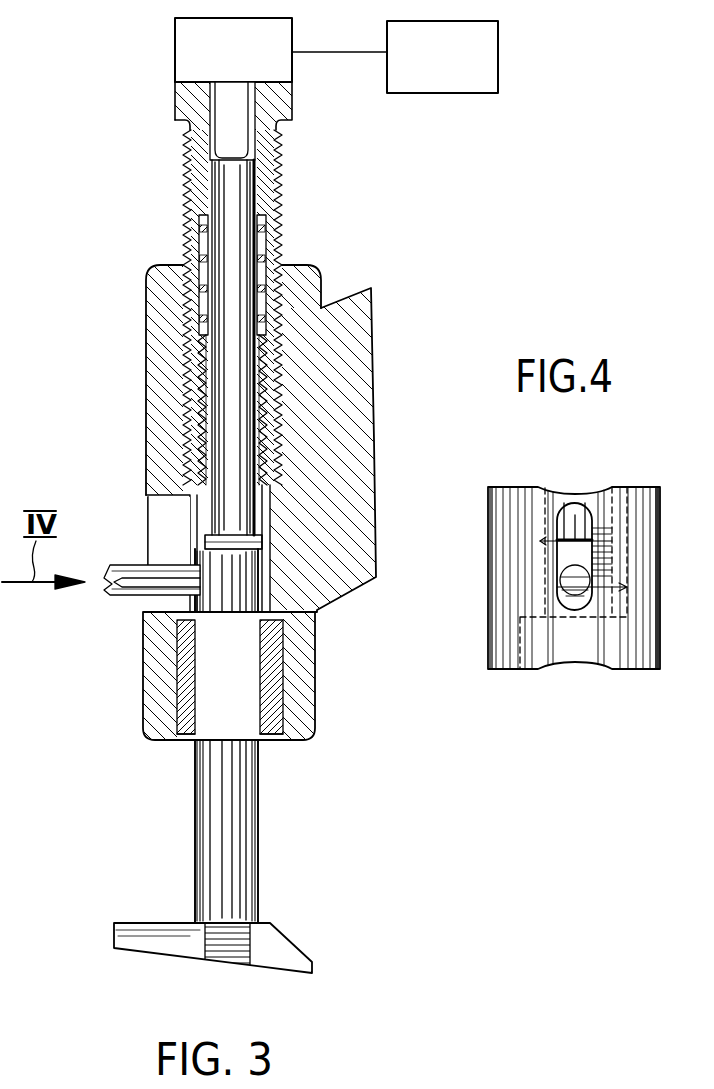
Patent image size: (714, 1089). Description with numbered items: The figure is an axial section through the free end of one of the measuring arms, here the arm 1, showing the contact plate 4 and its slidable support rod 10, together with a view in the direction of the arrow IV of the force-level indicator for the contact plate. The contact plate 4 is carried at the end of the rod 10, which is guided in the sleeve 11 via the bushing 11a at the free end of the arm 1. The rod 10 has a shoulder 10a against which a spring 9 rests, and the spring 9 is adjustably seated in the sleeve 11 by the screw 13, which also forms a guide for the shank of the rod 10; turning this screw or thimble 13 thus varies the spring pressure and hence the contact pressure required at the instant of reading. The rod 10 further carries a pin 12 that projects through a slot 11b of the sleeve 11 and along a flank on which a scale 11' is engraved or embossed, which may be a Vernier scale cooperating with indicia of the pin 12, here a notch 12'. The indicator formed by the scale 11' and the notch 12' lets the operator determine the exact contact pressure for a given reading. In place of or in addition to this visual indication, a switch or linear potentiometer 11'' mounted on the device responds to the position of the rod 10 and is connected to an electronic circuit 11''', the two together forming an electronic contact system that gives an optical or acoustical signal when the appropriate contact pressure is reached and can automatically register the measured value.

In FIG. 3, the arm 1 is at (346, 310).
In FIG. 3, the contact plate 4 is at (170, 930).
In FIG. 3, the spring 9 is at (190, 380).
In FIG. 3, the rod 10 is at (235, 798).
In FIG. 4, the rod 10 is at (576, 522).
In FIG. 3, the shoulder 10a is at (258, 540).
In FIG. 3, the sleeve 11 is at (219, 410).
In FIG. 4, the sleeve 11 is at (574, 558).
In FIG. 3, the bushing 11a is at (186, 740).
In FIG. 3, the slot 11b is at (162, 507).
In FIG. 4, the scale 11' is at (599, 519).
In FIG. 3, the switch or linear potentiometer 11'' is at (204, 50).
In FIG. 3, the electronic circuit 11''' is at (432, 57).
In FIG. 3, the pin 12 is at (152, 553).
In FIG. 3, the notch 12' is at (143, 606).
In FIG. 4, the notch 12' is at (570, 615).
In FIG. 3, the screw 13 is at (292, 104).